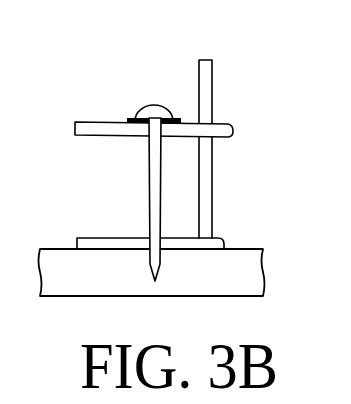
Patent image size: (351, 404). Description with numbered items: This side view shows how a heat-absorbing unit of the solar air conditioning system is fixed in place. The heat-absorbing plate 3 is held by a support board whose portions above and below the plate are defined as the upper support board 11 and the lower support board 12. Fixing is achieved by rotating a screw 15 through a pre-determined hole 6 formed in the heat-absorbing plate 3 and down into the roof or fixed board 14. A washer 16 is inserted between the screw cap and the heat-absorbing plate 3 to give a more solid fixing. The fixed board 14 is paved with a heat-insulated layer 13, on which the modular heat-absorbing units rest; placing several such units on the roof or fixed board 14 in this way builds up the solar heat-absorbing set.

The heat-absorbing plate 3 is at (257, 118).
The pre-determined hole 6 is at (121, 176).
The upper support board 11 is at (227, 40).
The lower support board 12 is at (213, 198).
The heat-insulated layer 13 is at (245, 222).
The fixed board 14 is at (264, 286).
The screw 15 is at (148, 104).
The washer 16 is at (127, 118).